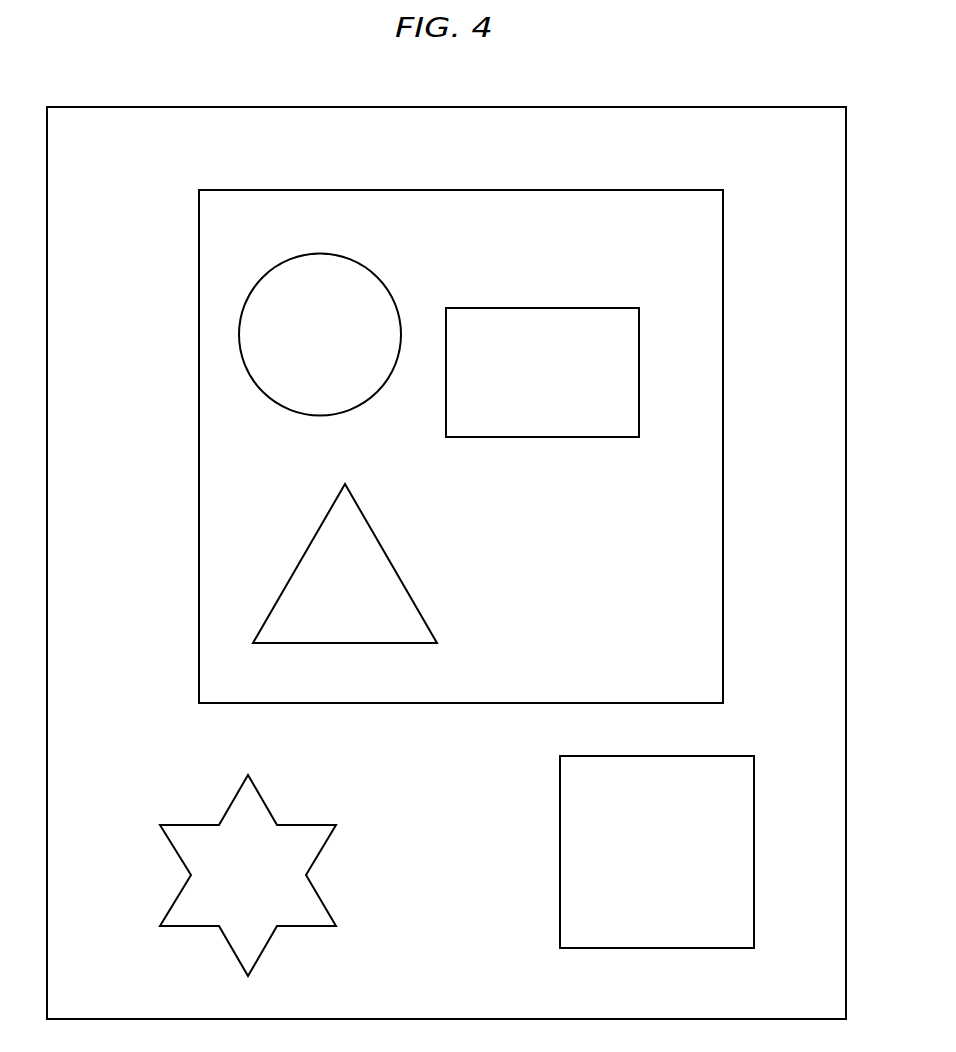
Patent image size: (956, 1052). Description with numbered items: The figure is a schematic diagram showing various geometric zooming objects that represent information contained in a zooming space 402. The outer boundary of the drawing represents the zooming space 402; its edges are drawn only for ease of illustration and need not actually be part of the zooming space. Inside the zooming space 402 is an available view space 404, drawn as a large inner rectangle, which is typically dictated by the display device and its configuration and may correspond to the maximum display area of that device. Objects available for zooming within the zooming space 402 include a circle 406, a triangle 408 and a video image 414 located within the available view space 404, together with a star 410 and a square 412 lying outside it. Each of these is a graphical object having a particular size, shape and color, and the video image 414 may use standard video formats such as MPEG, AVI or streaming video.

The zooming space 402 is at (498, 107).
The available view space 404 is at (440, 190).
The circle 406 is at (289, 410).
The triangle 408 is at (391, 560).
The star 410 is at (327, 843).
The square 412 is at (754, 860).
The video image 414 is at (552, 308).